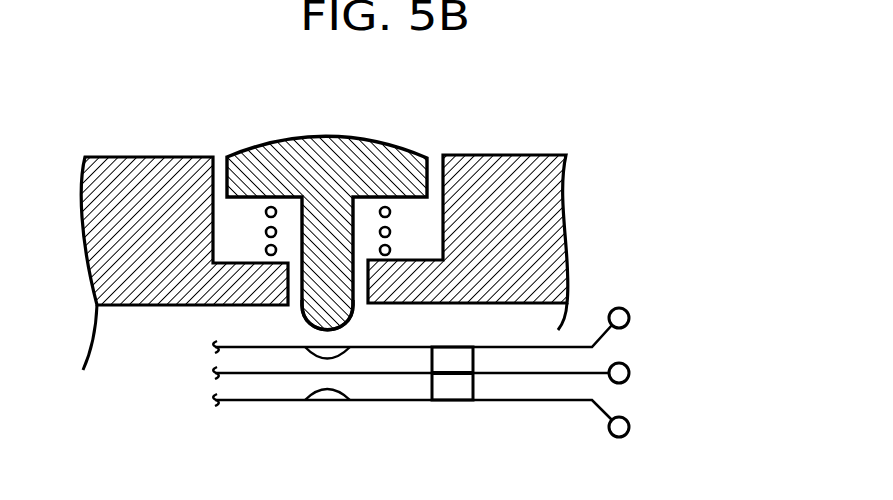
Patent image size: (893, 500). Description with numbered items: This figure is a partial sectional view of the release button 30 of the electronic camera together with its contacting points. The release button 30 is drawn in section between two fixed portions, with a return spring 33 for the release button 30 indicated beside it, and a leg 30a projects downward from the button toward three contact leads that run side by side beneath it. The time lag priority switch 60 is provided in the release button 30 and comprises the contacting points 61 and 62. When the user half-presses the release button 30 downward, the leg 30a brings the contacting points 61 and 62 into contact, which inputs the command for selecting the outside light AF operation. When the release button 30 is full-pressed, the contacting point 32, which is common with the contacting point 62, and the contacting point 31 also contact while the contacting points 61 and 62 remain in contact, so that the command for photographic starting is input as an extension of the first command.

The release button 30 is at (368, 146).
The leg 30a is at (303, 315).
The return spring 33 is at (390, 231).
The time lag priority switch 60 is at (492, 341).
The contacting point 61 is at (629, 318).
The contacting point 62 is at (461, 363).
The contacting point 31 is at (721, 373).
The contacting point 32 is at (462, 371).